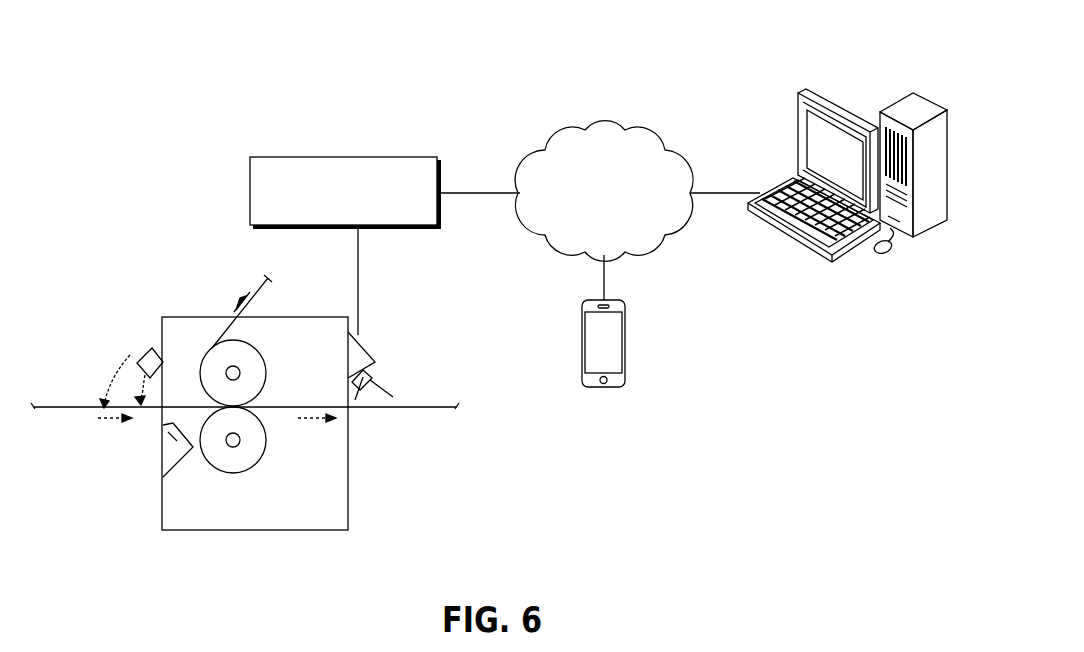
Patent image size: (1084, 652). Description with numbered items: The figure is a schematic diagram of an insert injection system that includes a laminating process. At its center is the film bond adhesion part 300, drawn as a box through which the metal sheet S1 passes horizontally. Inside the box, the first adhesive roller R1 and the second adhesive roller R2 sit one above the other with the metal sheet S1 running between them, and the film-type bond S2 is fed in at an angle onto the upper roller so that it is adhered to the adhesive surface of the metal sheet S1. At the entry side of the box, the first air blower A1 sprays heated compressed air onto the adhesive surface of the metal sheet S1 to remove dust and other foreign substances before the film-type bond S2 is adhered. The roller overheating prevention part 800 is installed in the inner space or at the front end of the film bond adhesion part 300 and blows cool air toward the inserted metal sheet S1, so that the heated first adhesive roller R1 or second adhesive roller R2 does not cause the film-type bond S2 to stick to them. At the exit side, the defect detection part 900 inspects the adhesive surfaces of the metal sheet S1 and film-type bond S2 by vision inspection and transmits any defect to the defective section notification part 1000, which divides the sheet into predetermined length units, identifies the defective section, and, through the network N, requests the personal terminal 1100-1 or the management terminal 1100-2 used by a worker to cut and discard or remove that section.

The film bond adhesion part 300 is at (197, 322).
The first adhesive roller R1 is at (265, 357).
The second adhesive roller R2 is at (265, 447).
The metal sheet S1 is at (62, 410).
The film-type bond S2 is at (220, 315).
The first air blower A1 is at (140, 355).
The roller overheating prevention part 800 is at (176, 470).
The defect detection part 900 is at (372, 345).
The defective section notification part 1000 is at (440, 173).
The network N is at (604, 125).
The management terminal 1100-2 is at (800, 122).
The personal terminal 1100-1 is at (627, 342).